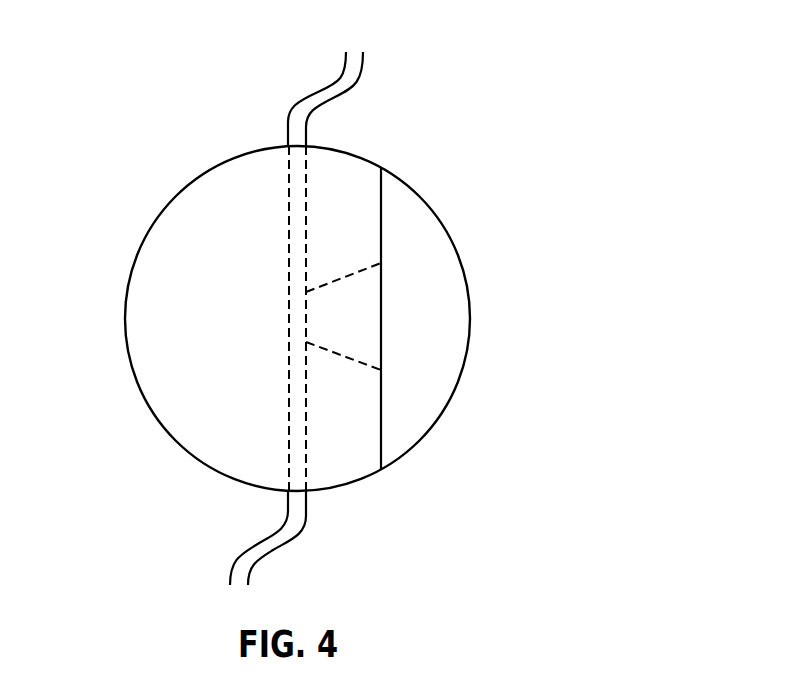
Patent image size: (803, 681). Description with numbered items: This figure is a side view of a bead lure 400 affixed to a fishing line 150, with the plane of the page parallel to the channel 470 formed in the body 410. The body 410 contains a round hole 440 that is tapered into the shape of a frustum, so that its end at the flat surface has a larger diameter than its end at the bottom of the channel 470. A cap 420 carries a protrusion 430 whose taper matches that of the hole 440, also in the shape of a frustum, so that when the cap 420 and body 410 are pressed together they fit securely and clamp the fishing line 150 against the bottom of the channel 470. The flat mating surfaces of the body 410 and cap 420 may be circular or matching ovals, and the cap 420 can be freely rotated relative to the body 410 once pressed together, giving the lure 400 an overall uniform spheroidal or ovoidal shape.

The wire 150 is at (363, 75).
The bead lure 400 is at (178, 113).
The body 410 is at (138, 282).
The cap 420 is at (425, 242).
The protrusion 430 is at (338, 298).
The round hole 440 is at (332, 353).
The channel 470 is at (382, 490).